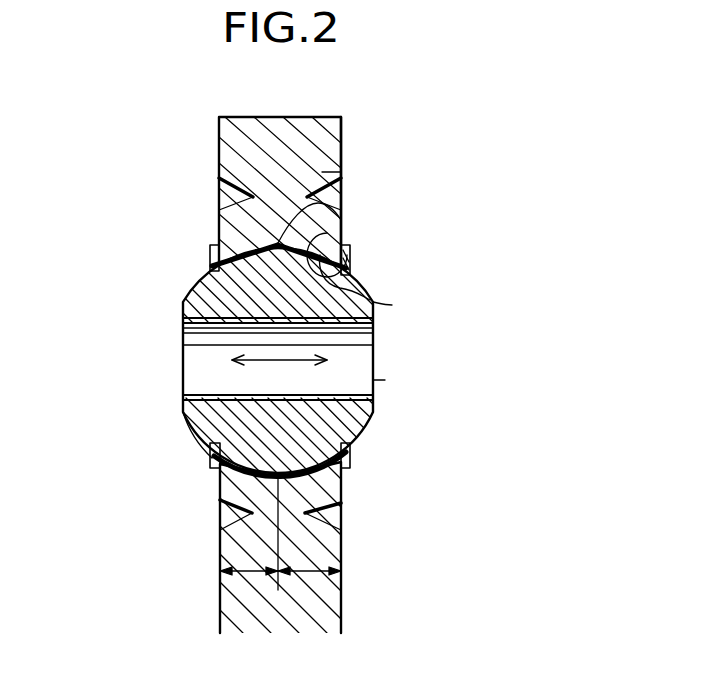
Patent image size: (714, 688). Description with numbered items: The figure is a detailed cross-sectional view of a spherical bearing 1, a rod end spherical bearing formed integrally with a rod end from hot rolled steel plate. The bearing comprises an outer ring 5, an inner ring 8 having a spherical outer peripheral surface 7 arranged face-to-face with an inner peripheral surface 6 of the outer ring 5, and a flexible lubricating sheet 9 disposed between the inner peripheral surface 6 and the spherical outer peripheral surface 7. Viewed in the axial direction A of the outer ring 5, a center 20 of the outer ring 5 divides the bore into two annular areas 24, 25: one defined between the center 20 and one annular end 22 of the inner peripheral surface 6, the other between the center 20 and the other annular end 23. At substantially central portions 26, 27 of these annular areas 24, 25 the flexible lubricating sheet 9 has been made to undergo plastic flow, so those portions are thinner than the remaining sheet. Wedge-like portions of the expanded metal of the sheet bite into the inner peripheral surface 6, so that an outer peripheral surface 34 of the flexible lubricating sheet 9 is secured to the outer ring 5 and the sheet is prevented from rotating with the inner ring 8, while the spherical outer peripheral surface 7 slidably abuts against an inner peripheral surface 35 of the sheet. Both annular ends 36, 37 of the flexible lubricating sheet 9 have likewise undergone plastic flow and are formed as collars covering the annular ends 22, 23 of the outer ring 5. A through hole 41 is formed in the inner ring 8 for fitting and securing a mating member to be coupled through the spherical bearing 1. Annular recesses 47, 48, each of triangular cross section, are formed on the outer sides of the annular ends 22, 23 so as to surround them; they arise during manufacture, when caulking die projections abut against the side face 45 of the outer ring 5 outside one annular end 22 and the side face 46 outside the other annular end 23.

The spherical bearing 1 is at (135, 365).
The outer ring 5 is at (341, 171).
The inner peripheral surface 6 is at (368, 432).
The spherical outer peripheral surface 7 is at (193, 422).
The inner ring 8 is at (373, 307).
The flexible lubricating sheet 9 is at (353, 262).
The center 20 is at (341, 198).
The one annular end 22 is at (212, 256).
The other annular end 23 is at (345, 445).
The annular area 24 is at (220, 590).
The annular area 25 is at (341, 593).
The substantially central portion 26 is at (220, 483).
The substantially central portion 27 is at (341, 483).
The outer peripheral surface 34 is at (341, 226).
The inner peripheral surface 35 is at (363, 298).
The annular end 36 is at (212, 264).
The annular end 37 is at (345, 468).
The through hole 41 is at (287, 368).
The side face 45 is at (219, 146).
The side face 46 is at (341, 134).
The annular recess 47 is at (219, 192).
The annular recess 48 is at (341, 518).
The axial direction A is at (373, 380).